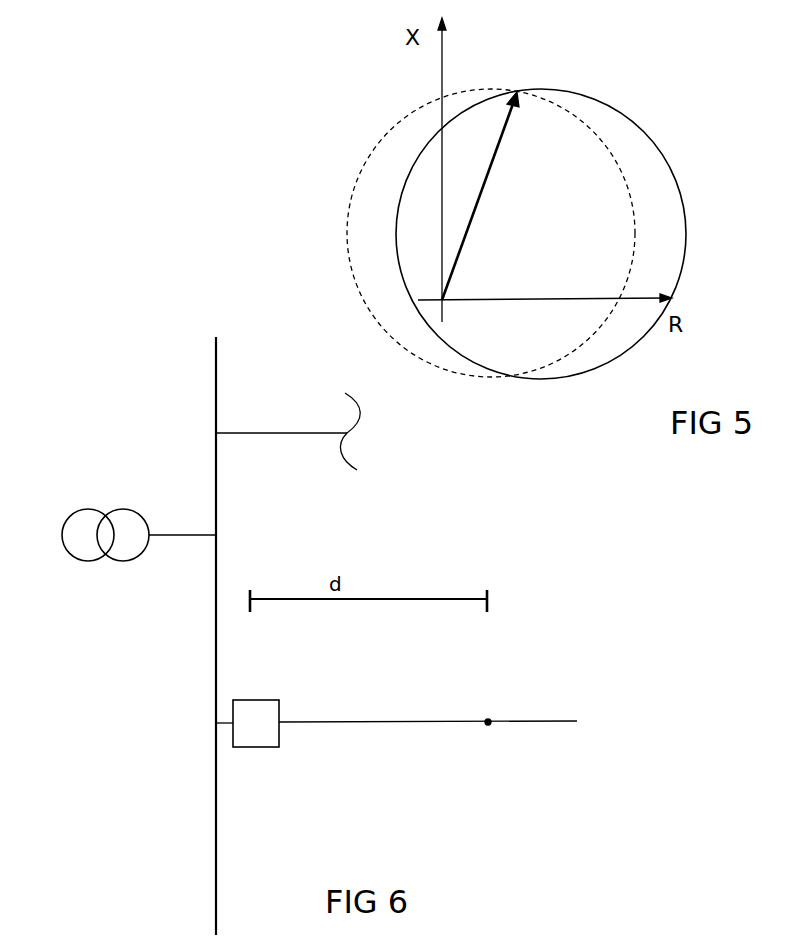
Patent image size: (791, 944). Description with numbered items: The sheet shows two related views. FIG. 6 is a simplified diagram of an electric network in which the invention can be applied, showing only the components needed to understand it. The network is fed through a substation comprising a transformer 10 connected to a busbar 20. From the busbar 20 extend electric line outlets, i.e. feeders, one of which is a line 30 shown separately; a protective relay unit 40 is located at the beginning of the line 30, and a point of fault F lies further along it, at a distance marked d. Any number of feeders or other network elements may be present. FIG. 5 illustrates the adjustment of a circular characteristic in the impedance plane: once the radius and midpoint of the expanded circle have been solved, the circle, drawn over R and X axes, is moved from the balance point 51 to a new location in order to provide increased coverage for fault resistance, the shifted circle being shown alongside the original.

In FIG. 6, the transformer 10 is at (88, 510).
In FIG. 5, the busbar 20 is at (637, 120).
In FIG. 6, the busbar 20 is at (213, 393).
In FIG. 6, the feeder 30 is at (417, 720).
In FIG. 6, the protective relay unit 40 is at (279, 702).
In FIG. 5, the balance point 51 is at (492, 88).